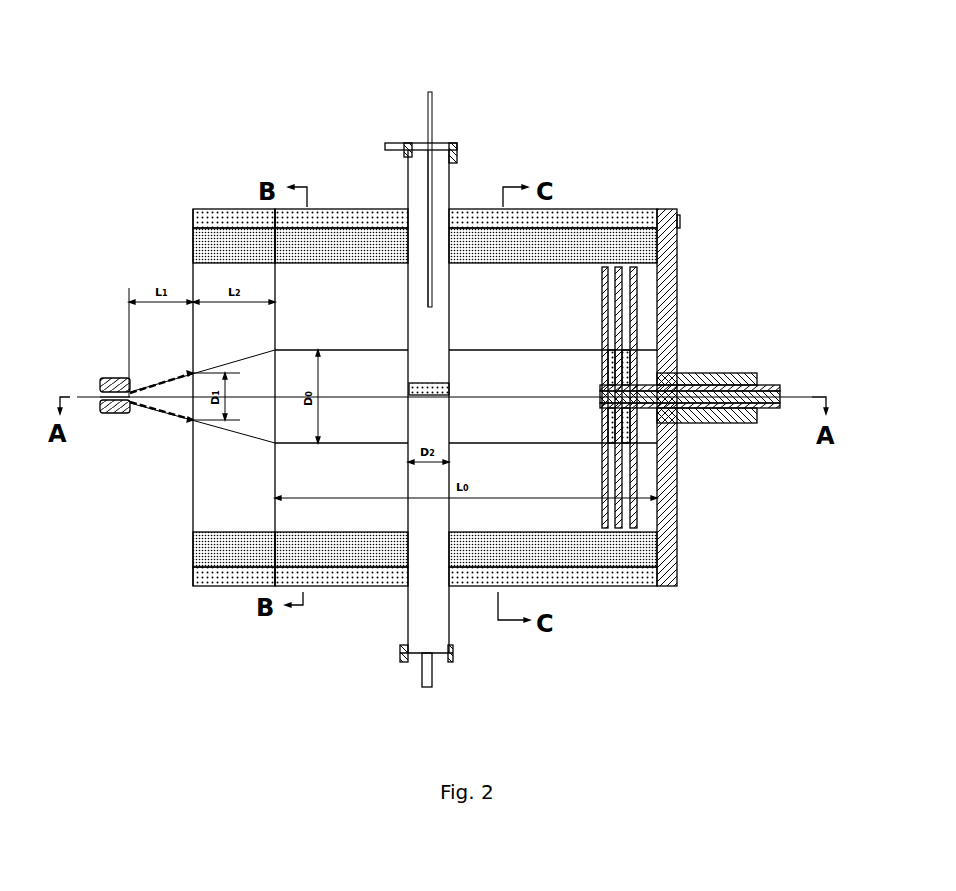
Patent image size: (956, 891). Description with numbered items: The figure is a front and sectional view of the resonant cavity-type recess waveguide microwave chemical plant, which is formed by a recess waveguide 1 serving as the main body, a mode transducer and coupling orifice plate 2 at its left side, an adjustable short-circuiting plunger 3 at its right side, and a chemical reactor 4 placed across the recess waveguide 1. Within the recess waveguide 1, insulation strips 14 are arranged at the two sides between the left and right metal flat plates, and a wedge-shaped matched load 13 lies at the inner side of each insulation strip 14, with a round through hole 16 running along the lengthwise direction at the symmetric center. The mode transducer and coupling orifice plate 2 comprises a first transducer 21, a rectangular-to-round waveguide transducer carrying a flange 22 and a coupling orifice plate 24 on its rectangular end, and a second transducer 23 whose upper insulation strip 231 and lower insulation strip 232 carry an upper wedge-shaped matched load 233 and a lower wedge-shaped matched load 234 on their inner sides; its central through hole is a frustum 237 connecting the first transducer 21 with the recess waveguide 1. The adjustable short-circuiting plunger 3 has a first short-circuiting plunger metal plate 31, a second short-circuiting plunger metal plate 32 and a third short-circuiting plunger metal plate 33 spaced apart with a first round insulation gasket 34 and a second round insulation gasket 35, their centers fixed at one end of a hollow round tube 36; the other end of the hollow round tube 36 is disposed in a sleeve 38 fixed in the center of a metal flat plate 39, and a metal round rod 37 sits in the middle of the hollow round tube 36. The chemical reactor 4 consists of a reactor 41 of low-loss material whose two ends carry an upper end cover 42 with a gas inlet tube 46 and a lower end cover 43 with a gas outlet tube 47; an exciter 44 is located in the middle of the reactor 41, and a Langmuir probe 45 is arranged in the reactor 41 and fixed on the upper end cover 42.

The recess waveguide 1 is at (553, 270).
The mode transducer and coupling orifice plate 2 is at (187, 405).
The adjustable short-circuiting plunger 3 is at (719, 453).
The chemical reactor 4 is at (377, 164).
The wedge-shaped matched load 13 is at (500, 369).
The insulation strip 14 is at (500, 358).
The inner bore 16 is at (284, 425).
The first transducer 21 is at (126, 335).
The flange 22 is at (135, 470).
The second transducer 23 is at (203, 389).
The coupling orifice plate 24 is at (130, 476).
The first short-circuiting plunger metal plate 31 is at (693, 409).
The second short-circuiting plunger metal plate 32 is at (685, 426).
The third short-circuiting plunger metal plate 33 is at (679, 443).
The first round insulation gasket 34 is at (682, 377).
The second round insulation gasket 35 is at (689, 389).
The hollow round tube 36 is at (748, 433).
The metal round rod 37 is at (719, 460).
The sleeve 38 is at (719, 474).
The metal flat plate 39 is at (706, 397).
The reactor 41 is at (356, 438).
The upper end cover 42 is at (491, 195).
The lower end cover 43 is at (358, 675).
The exciter 44 is at (348, 272).
The Langmuir probe 45 is at (491, 213).
The gas inlet tube 46 is at (377, 119).
The gas outlet tube 47 is at (371, 684).
The upper insulation strip of the second mode transducer 231 is at (199, 176).
The lower insulation strip of the second mode transducer 232 is at (198, 611).
The upper wedge-shaped matched load of the second mode transducer 233 is at (199, 216).
The lower wedge-shaped matched load of the second mode transducer 234 is at (198, 576).
The spray cone 237 is at (191, 421).